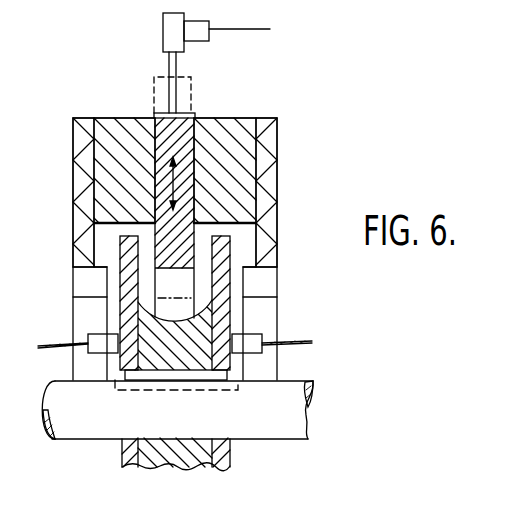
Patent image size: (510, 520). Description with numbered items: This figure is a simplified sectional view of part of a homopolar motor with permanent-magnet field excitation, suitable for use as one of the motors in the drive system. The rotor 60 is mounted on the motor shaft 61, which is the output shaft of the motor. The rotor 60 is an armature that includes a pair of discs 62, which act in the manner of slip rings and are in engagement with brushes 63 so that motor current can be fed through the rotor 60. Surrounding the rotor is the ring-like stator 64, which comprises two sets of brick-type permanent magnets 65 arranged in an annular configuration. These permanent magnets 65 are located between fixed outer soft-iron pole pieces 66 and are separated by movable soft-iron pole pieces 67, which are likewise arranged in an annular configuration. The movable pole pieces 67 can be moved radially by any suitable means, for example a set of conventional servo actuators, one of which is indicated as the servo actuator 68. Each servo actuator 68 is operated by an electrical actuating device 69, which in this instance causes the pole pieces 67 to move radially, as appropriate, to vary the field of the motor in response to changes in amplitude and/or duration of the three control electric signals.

The rotor 60 is at (233, 456).
The motor shaft 61 is at (288, 414).
The discs 62 is at (120, 241).
The brushes 63 is at (100, 334).
The stator 64 is at (281, 152).
The brick-type permanent magnets 65 is at (110, 117).
The fixed outer soft-iron pole pieces 66 is at (73, 156).
The movable soft-iron pole pieces 67 is at (183, 113).
The servo actuator 68 is at (170, 36).
The electrical actuating device 69 is at (208, 42).